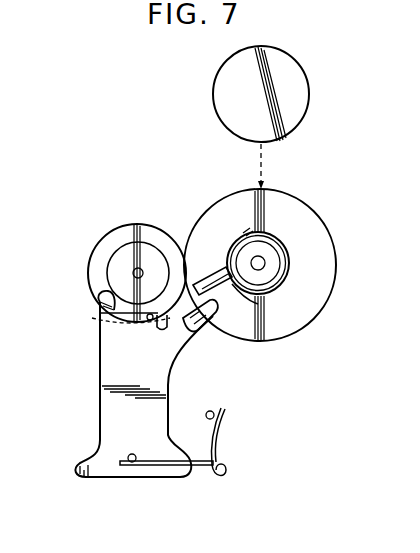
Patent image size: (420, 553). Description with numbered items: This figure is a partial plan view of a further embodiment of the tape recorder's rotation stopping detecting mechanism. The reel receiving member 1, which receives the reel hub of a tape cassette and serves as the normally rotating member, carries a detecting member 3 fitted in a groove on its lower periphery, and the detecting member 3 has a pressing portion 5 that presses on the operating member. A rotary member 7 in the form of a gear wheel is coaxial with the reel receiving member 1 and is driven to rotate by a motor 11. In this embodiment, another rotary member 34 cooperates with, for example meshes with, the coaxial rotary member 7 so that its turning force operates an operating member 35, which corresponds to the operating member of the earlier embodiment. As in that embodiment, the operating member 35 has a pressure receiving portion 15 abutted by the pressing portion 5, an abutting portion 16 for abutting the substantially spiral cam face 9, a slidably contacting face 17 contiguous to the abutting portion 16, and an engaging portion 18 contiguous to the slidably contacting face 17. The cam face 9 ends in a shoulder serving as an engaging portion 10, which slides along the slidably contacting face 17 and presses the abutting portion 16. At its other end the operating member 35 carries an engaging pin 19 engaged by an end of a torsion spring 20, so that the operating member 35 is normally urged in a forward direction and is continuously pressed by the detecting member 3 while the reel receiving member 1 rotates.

The reel receiving member 1 is at (270, 258).
The detecting member 3 is at (245, 233).
The pressing portion 5 is at (197, 281).
The rotary member 7 is at (202, 205).
The cam face 9 is at (107, 255).
The engaging portion 10 is at (120, 310).
The motor 11 is at (309, 91).
The pressure receiving portion 15 is at (233, 311).
The abutting portion 16 is at (96, 292).
The slidably contacting face 17 is at (143, 325).
The engaging portion 18 is at (182, 320).
The engaging pin 19 is at (131, 454).
The torsion spring 20 is at (224, 440).
The rotary member 34 is at (143, 223).
The operating member 35 is at (100, 400).